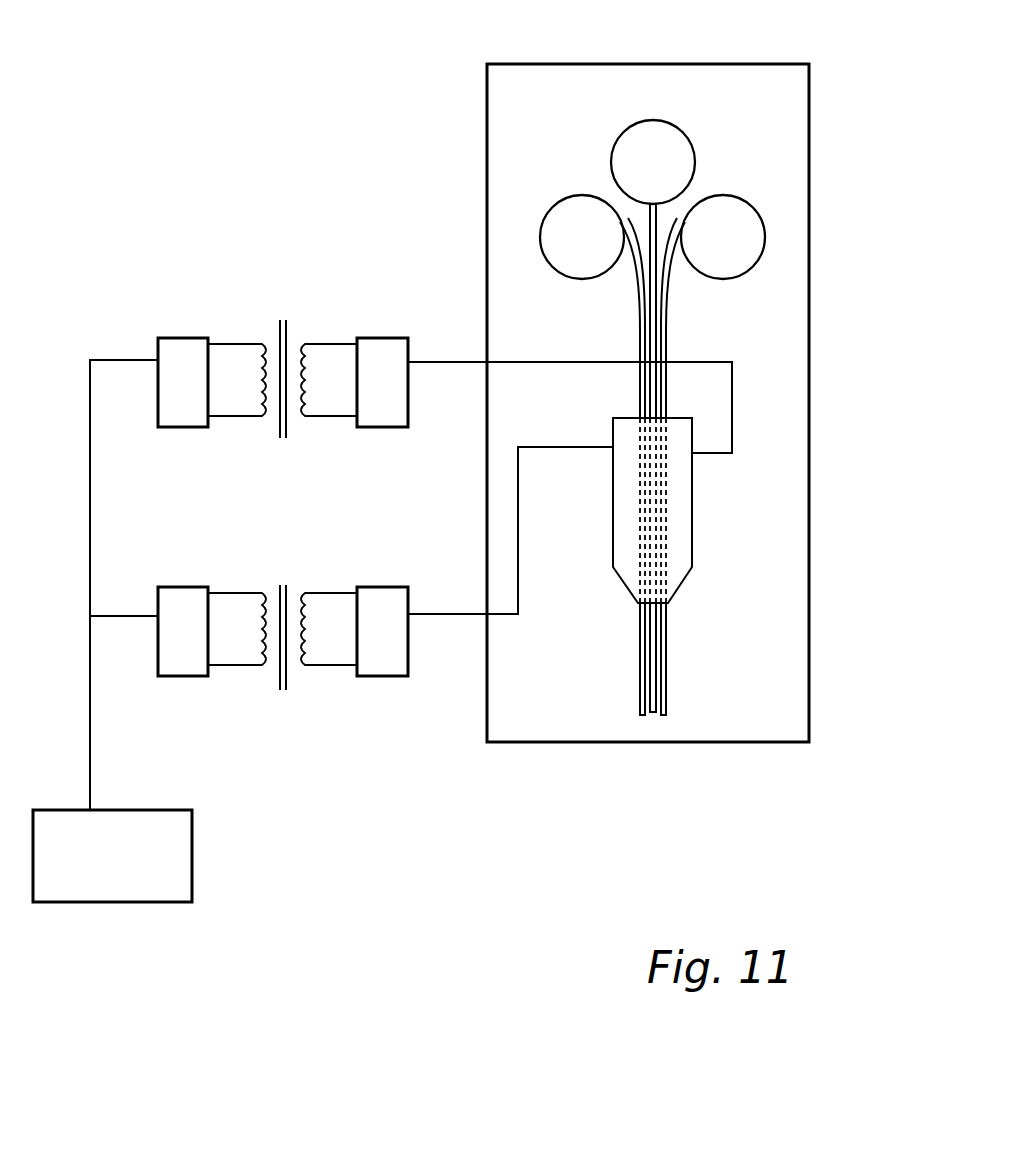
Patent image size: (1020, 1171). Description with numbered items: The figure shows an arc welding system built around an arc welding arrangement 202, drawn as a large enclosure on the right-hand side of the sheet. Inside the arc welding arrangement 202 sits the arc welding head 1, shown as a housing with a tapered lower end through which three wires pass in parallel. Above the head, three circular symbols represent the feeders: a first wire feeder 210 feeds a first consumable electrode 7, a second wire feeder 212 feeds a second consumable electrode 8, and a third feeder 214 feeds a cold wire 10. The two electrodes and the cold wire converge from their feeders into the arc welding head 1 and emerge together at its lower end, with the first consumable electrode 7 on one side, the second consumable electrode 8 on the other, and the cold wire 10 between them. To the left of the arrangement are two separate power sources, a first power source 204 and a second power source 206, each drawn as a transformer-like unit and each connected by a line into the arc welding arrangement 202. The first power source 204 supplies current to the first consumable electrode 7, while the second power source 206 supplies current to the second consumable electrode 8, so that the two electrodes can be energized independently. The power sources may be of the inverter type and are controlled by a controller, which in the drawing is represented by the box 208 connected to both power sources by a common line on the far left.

The arc welding head 1 is at (707, 502).
The first consumable electrode 7 is at (640, 693).
The second consumable electrode 8 is at (667, 700).
The cold wire 10 is at (652, 715).
The arc welding arrangement 202 is at (809, 474).
The first power source 204 is at (303, 282).
The second power source 206 is at (297, 547).
The power supply unit 208 is at (242, 835).
The first wire feeder 210 is at (573, 208).
The second wire feeder 212 is at (722, 206).
The third feeder 214 is at (656, 130).